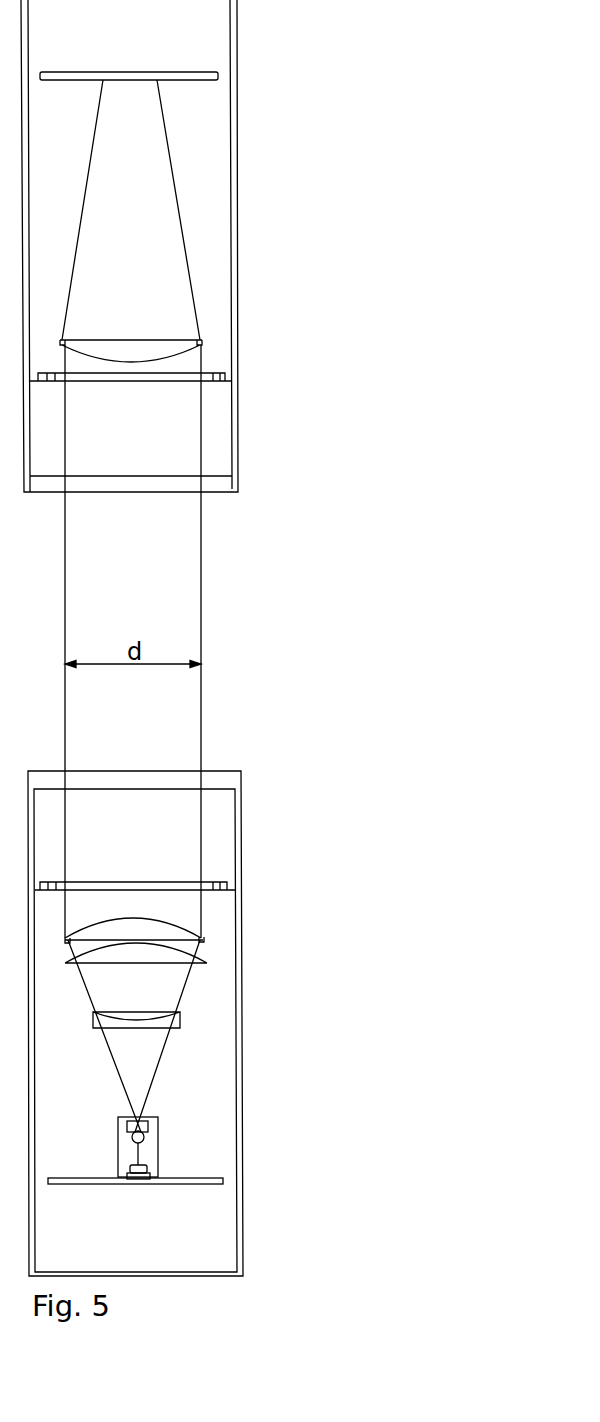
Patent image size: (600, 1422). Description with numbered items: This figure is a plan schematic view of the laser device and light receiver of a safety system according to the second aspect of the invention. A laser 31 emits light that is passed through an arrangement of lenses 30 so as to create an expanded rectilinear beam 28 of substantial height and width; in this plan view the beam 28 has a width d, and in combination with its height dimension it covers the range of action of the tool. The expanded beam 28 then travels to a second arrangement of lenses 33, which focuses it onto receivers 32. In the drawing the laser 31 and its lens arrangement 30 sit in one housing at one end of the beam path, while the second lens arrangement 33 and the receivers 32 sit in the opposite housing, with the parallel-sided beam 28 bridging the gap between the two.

The rectilinear beam 28 is at (203, 637).
The arrangement of lenses 30 is at (204, 937).
The laser 31 is at (160, 1172).
The receivers 32 is at (127, 83).
The second arrangement of lenses 33 is at (153, 335).